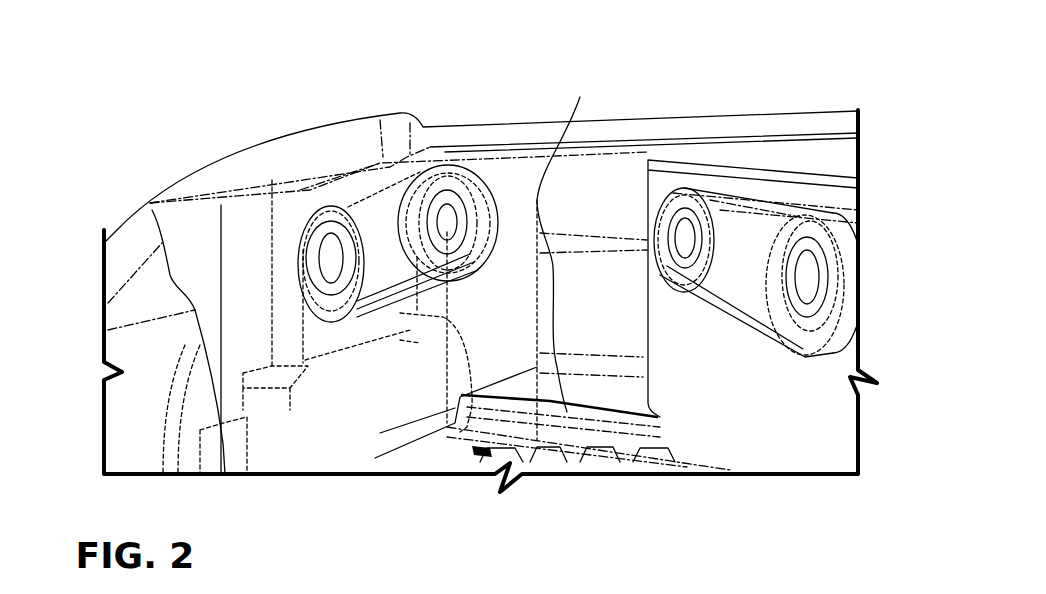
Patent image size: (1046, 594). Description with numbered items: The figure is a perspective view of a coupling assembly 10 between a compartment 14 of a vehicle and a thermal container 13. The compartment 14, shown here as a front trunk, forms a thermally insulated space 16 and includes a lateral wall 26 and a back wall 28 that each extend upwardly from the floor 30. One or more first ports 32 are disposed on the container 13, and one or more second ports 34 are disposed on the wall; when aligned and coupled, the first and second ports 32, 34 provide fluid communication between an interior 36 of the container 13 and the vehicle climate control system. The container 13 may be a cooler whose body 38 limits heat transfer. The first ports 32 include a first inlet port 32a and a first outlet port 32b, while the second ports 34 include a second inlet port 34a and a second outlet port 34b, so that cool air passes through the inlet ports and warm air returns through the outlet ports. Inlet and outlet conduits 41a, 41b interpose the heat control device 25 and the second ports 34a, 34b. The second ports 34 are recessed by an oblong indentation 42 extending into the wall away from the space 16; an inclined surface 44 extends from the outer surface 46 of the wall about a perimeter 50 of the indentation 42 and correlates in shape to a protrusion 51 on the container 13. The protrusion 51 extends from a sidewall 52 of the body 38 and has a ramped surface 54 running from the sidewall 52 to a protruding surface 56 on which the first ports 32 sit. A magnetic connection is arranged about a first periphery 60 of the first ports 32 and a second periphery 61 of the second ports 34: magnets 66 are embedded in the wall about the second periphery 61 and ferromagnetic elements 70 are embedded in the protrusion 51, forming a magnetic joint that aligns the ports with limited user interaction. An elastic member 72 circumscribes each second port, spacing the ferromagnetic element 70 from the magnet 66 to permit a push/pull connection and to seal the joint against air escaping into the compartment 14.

The coupling assembly 10 is at (612, 110).
The thermal container 13 is at (788, 170).
The compartment 14 is at (403, 203).
The thermally insulated space 16 is at (590, 396).
The heat control device 25 is at (203, 430).
The lateral wall 26 is at (277, 243).
The back wall 28 is at (557, 167).
The floor 30 is at (584, 462).
The first ports 32 is at (700, 277).
The first inlet port 32a is at (812, 272).
The first outlet port 32b is at (690, 240).
The second ports 34 is at (355, 287).
The second inlet port 34a is at (333, 256).
The second outlet port 34b is at (352, 232).
The interior 36 is at (762, 422).
The body 38 is at (664, 165).
The inlet conduit 41a is at (272, 328).
The outlet conduit 41b is at (447, 463).
The indentation 42 is at (429, 182).
The inclined surface 44 is at (470, 190).
The outer surface 46 is at (505, 328).
The perimeter 50 is at (592, 238).
The protrusion 51 is at (702, 320).
The sidewall 52 is at (730, 440).
The ramped surface 54 is at (838, 297).
The protruding surface 56 is at (733, 212).
The first periphery 60 is at (820, 244).
The second periphery 61 is at (443, 217).
The magnet 66 is at (340, 260).
The ferromagnetic element 70 is at (683, 208).
The elastic member 72 is at (312, 278).